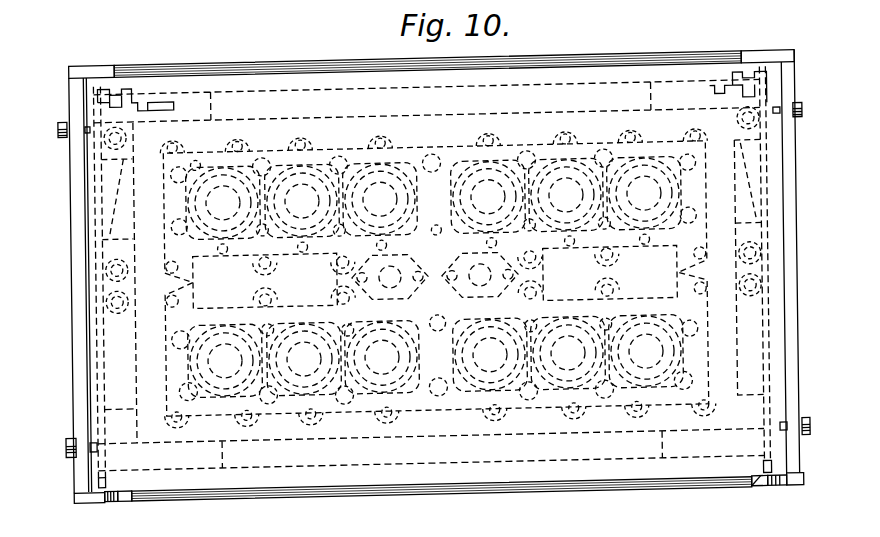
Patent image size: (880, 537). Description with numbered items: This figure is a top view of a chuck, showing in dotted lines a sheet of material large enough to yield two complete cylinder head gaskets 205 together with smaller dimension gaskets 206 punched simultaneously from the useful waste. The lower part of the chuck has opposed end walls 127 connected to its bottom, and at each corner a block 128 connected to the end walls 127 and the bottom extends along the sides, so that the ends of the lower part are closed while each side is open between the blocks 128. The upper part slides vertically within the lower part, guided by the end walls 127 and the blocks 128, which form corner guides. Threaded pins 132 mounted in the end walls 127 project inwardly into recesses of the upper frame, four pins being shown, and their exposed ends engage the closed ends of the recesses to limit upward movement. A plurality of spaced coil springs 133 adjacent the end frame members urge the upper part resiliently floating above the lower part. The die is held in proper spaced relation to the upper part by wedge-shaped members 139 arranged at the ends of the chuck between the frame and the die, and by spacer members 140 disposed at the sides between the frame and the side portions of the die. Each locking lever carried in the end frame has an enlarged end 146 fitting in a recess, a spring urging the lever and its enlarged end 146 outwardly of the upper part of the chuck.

The end walls 127 is at (86, 312).
The block 128 is at (94, 495).
The threaded pins 132 is at (63, 114).
The coil springs 133 is at (740, 123).
The wedge-shaped members 139 is at (114, 198).
The spacer members 140 is at (408, 454).
The enlarged end 146 is at (762, 485).
The cylinder head gaskets 205 is at (467, 138).
The smaller dimension gaskets 206 is at (368, 177).